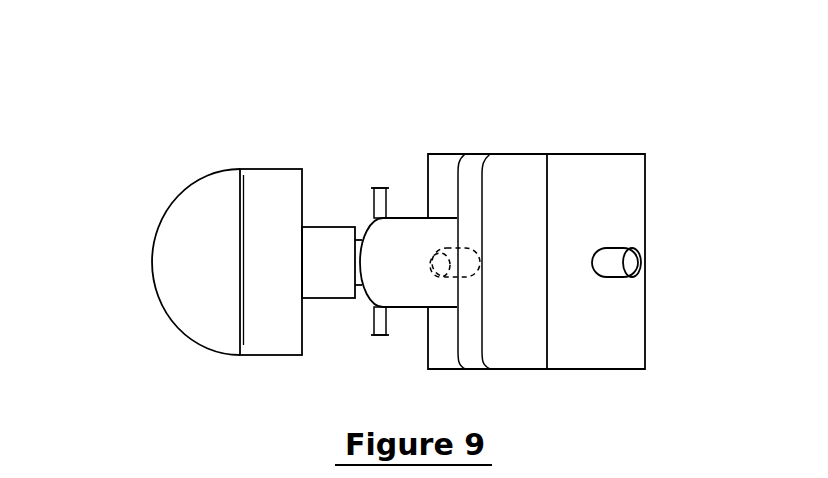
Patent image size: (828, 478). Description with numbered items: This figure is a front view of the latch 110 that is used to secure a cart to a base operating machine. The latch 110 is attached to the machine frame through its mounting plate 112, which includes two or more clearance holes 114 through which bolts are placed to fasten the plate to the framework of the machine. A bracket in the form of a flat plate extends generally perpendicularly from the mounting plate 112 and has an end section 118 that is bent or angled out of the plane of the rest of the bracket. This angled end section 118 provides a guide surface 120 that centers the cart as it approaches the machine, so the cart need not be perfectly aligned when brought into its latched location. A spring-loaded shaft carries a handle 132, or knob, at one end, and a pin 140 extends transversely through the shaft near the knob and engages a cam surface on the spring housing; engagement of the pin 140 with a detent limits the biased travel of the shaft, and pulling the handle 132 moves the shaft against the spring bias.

The latch 110 is at (671, 110).
The mounting plate 112 is at (593, 200).
The clearance holes 114 is at (640, 277).
The end section 118 is at (468, 178).
The guide surface 120 is at (510, 310).
The handle 132 is at (153, 260).
The pin 140 is at (380, 188).